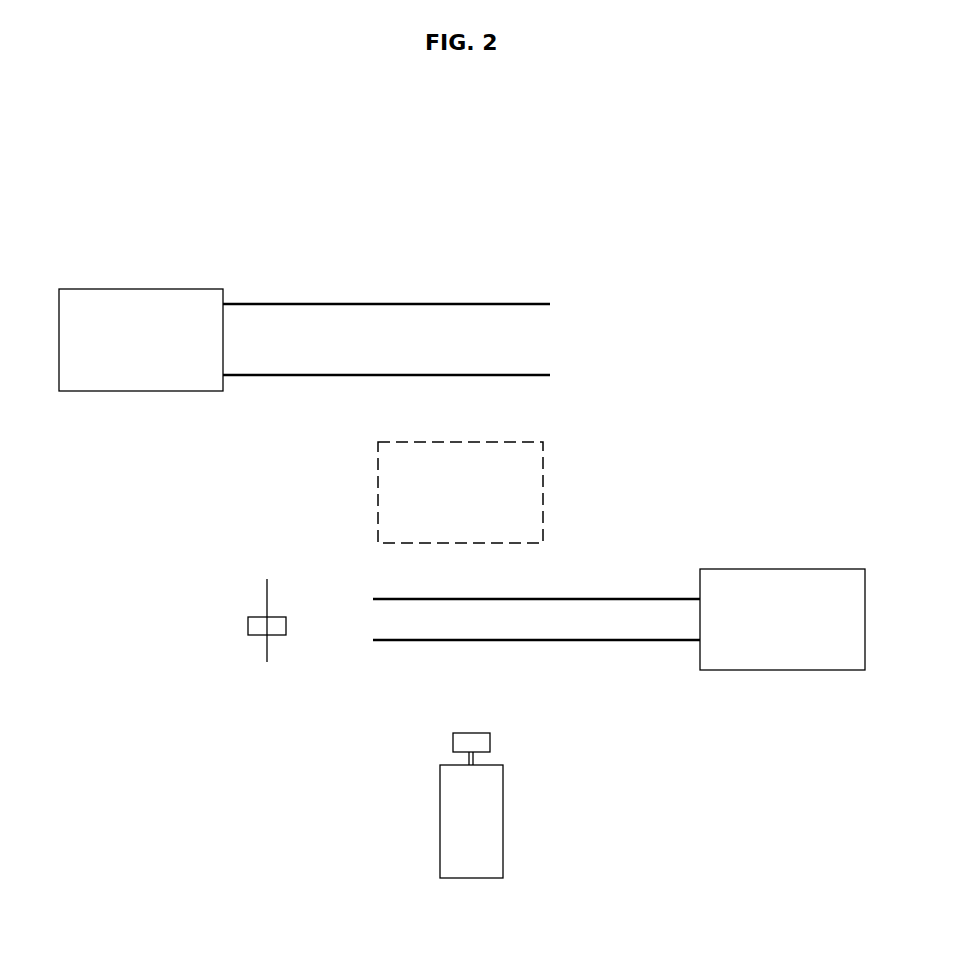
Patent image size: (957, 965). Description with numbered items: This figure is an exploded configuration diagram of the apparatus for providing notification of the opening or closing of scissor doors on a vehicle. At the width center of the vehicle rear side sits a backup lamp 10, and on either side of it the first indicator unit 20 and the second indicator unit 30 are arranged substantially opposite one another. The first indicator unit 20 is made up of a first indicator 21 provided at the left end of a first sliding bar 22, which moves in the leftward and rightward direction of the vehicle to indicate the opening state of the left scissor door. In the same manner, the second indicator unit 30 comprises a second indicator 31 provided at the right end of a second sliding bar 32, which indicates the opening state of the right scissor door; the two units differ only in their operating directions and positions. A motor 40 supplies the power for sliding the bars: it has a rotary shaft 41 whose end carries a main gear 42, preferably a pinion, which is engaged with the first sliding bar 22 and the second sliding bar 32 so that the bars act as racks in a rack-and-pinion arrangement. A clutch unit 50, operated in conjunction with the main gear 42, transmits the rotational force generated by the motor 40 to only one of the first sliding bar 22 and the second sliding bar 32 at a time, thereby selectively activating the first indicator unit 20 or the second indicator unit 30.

The backup lamp 10 is at (378, 490).
The first indicator unit 20 is at (247, 243).
The first indicator 21 is at (140, 296).
The first sliding bar 22 is at (404, 375).
The second indicator unit 30 is at (687, 697).
The second indicator 31 is at (782, 668).
The second sliding bar 32 is at (566, 600).
The motor 40 is at (455, 825).
The rotary shaft 41 is at (470, 762).
The main gear 42 is at (458, 743).
The clutch unit 50 is at (252, 630).